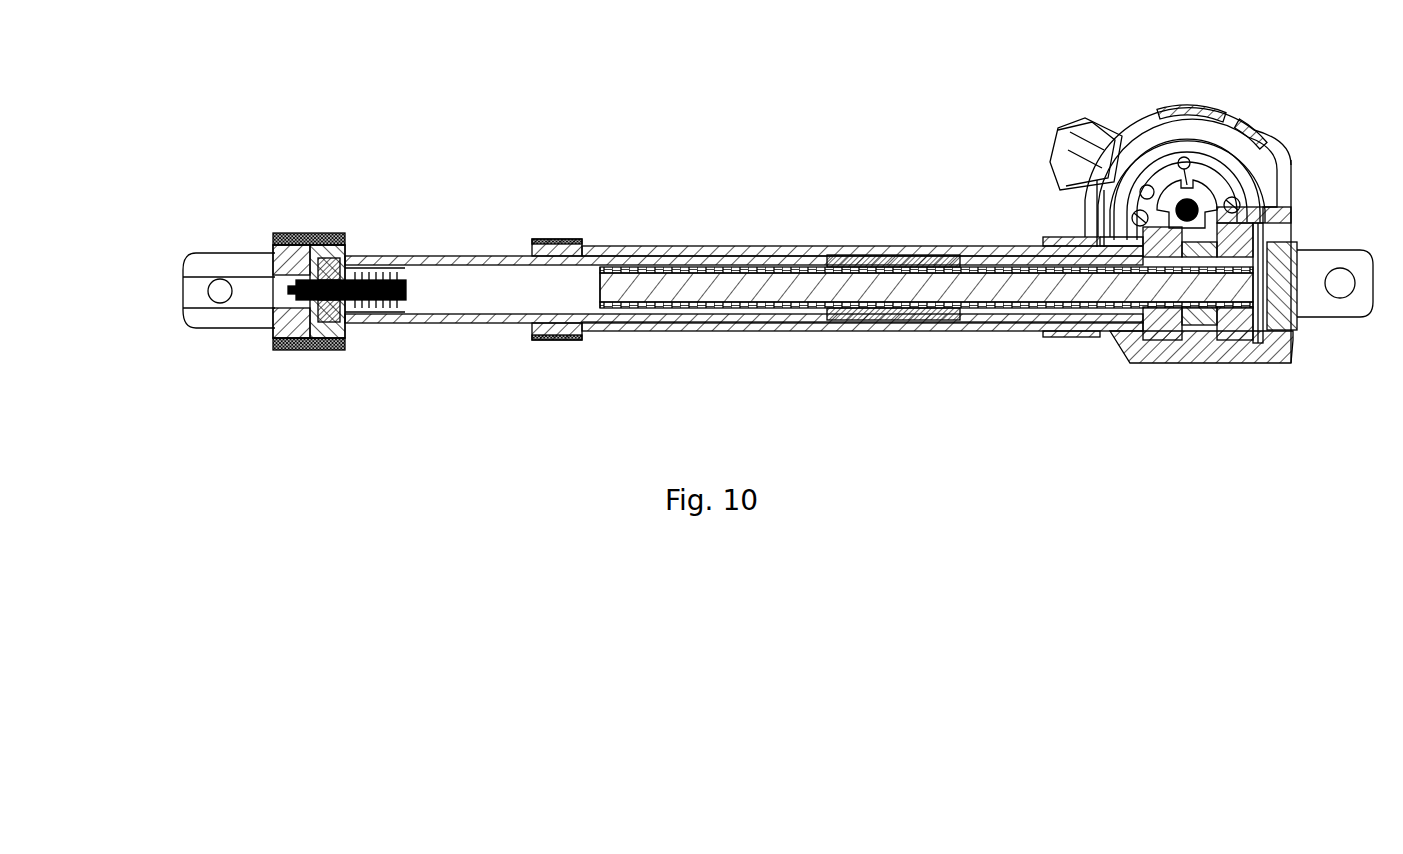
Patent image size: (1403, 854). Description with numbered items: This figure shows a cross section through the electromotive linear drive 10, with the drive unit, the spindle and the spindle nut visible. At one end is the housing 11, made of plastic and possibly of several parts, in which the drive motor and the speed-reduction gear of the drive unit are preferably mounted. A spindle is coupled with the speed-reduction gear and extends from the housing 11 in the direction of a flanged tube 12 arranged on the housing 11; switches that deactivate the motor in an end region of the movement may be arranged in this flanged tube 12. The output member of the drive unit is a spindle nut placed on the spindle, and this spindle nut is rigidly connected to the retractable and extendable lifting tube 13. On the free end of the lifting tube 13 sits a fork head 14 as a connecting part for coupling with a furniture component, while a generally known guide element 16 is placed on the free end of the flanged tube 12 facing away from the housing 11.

The electromotive linear drive 10 is at (1250, 94).
The housing 11 is at (1160, 105).
The flanged tube 12 is at (746, 245).
The lifting tube 13 is at (446, 255).
The fork head 14 is at (222, 262).
The guide element 16 is at (560, 238).